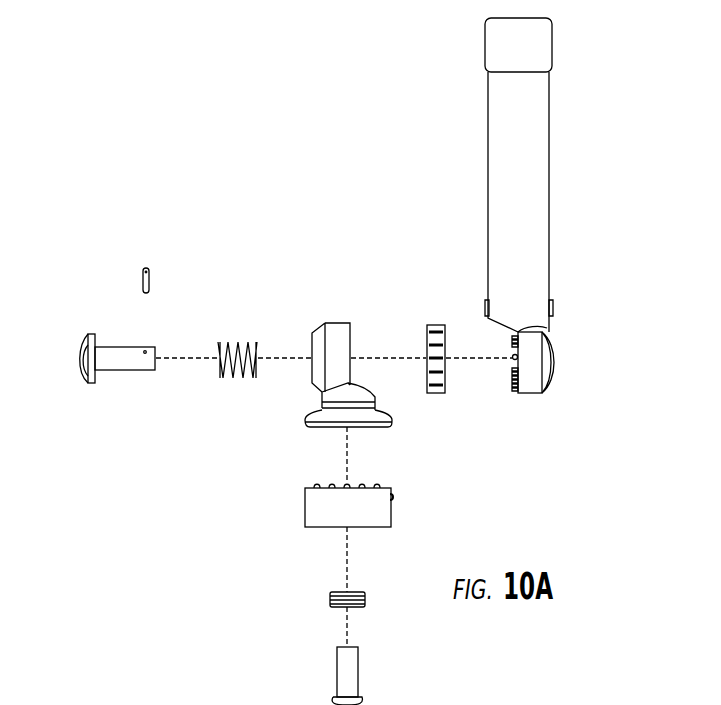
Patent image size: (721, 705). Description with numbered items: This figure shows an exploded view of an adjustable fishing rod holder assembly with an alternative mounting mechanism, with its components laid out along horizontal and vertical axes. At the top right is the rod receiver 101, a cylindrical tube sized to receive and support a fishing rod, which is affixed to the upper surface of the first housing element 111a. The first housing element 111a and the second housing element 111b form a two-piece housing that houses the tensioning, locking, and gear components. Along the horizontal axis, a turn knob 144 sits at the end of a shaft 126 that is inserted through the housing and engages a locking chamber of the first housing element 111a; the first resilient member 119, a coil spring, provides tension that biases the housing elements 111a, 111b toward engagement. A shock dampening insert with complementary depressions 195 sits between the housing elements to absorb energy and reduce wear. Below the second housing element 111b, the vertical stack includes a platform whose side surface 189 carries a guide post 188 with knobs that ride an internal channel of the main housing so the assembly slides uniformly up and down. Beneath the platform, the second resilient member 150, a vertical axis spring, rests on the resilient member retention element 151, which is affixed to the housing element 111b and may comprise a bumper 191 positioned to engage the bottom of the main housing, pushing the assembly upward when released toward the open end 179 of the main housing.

The rod receiver 101 is at (550, 163).
The first housing element 111a is at (552, 360).
The second housing element 111b is at (337, 330).
The complementary depressions 195 is at (445, 325).
The turn knob 144 is at (85, 342).
The shaft 126 is at (118, 372).
The first resilient member 119 is at (243, 342).
The side surface 189 is at (392, 517).
The guide post 188 is at (393, 496).
The second resilient member 150 is at (328, 597).
The resilient member retention element 151 is at (358, 660).
The bumper 191 is at (410, 690).
The open end 179 is at (581, 693).